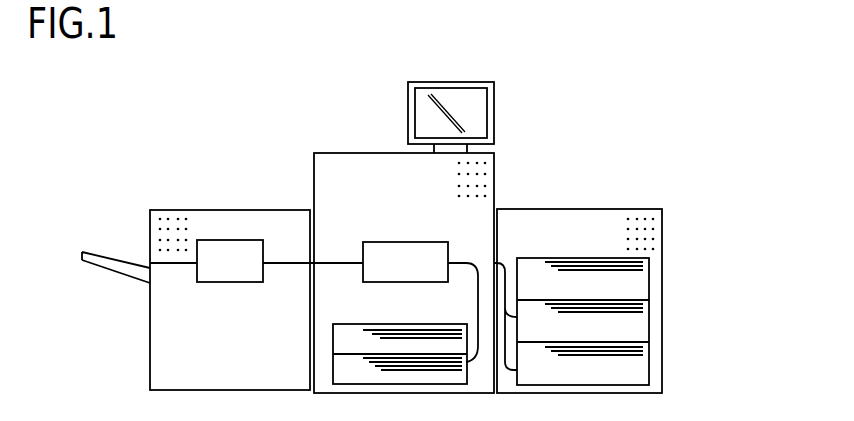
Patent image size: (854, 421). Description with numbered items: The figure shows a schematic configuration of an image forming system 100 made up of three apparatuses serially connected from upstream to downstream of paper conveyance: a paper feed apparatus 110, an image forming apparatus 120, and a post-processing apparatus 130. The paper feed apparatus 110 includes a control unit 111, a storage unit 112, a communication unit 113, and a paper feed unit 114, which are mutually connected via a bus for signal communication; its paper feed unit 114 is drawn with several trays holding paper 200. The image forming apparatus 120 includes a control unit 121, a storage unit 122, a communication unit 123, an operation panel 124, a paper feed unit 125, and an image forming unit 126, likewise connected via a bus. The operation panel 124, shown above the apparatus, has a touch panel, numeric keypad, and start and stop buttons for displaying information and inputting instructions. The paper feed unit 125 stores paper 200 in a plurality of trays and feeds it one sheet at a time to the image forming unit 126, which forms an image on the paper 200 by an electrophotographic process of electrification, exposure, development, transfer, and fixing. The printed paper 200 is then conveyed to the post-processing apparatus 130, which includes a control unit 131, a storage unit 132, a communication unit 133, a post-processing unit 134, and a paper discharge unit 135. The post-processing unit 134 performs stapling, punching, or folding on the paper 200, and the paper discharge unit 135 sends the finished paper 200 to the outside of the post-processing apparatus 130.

The image forming system 100 is at (118, 86).
The paper feed apparatus 110 is at (624, 208).
The control unit 111 is at (663, 221).
The storage unit 112 is at (663, 240).
The communication unit 113 is at (663, 251).
The paper feed unit 114 is at (528, 256).
The image forming apparatus 120 is at (347, 152).
The control unit 121 is at (495, 162).
The storage unit 122 is at (495, 178).
The communication unit 123 is at (492, 194).
The operation panel 124 is at (495, 106).
The paper feed unit 125 is at (357, 317).
The image forming unit 126 is at (413, 241).
The post-processing apparatus 130 is at (270, 208).
The control unit 131 is at (160, 216).
The storage unit 132 is at (157, 229).
The communication unit 133 is at (157, 242).
The post-processing unit 134 is at (223, 284).
The paper discharge unit 135 is at (110, 270).
The paper 200 is at (424, 326).